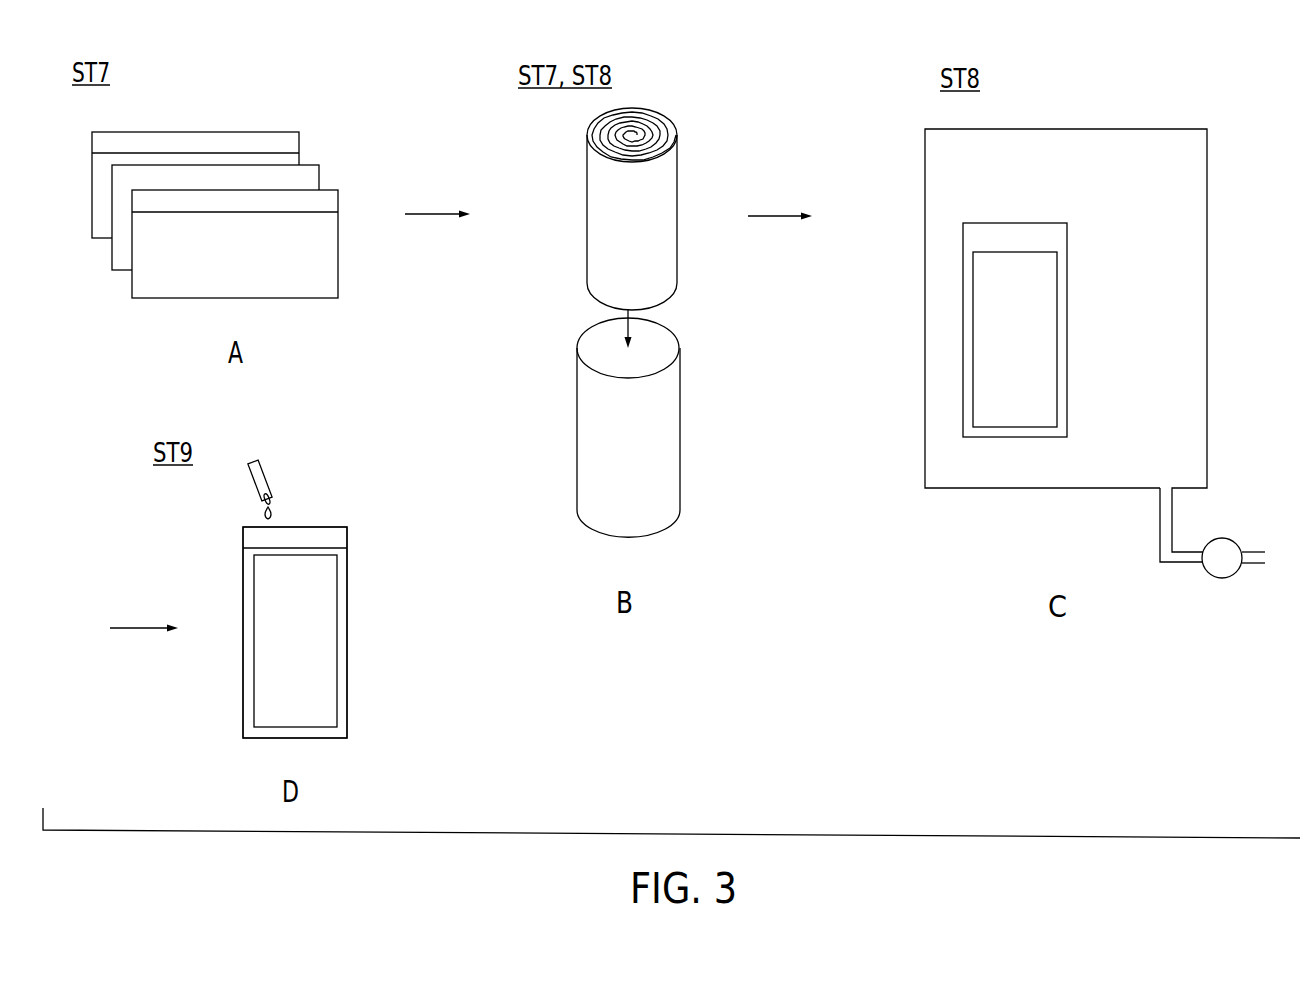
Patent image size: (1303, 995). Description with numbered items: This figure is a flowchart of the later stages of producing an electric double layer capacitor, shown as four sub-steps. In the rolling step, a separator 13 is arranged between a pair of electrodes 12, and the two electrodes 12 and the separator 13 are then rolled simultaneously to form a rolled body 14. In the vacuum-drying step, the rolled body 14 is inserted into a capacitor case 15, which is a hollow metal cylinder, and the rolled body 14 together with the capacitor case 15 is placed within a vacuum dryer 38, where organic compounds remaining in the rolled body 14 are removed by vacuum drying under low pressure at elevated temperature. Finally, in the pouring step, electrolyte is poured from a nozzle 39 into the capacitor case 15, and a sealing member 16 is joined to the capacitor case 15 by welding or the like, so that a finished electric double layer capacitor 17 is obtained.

The electrode 12 is at (232, 189).
The separator 13 is at (310, 163).
The rolled body 14 is at (681, 160).
The capacitor case 15 is at (680, 417).
The sealing member 16 is at (330, 530).
The electric double layer capacitor 17 is at (364, 517).
The vacuum dryer 38 is at (1207, 232).
The nozzle 39 is at (263, 468).